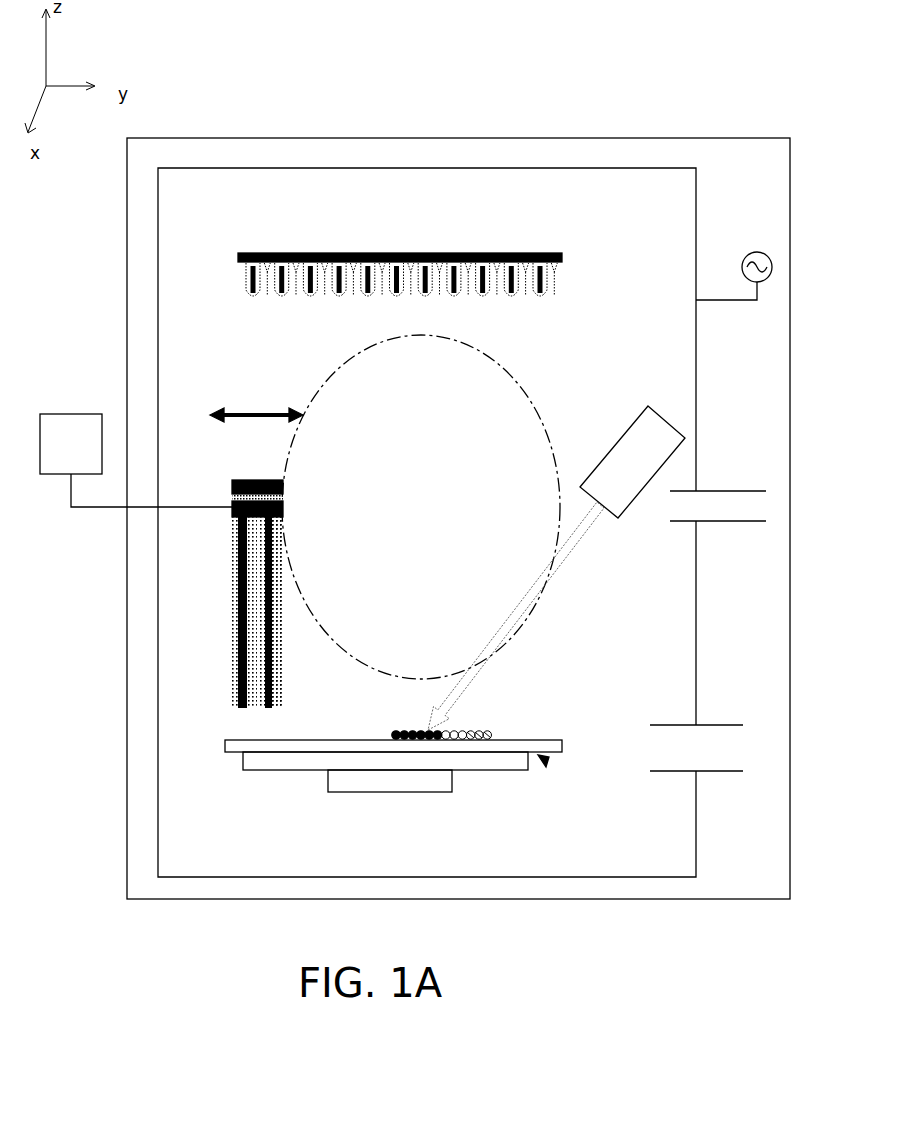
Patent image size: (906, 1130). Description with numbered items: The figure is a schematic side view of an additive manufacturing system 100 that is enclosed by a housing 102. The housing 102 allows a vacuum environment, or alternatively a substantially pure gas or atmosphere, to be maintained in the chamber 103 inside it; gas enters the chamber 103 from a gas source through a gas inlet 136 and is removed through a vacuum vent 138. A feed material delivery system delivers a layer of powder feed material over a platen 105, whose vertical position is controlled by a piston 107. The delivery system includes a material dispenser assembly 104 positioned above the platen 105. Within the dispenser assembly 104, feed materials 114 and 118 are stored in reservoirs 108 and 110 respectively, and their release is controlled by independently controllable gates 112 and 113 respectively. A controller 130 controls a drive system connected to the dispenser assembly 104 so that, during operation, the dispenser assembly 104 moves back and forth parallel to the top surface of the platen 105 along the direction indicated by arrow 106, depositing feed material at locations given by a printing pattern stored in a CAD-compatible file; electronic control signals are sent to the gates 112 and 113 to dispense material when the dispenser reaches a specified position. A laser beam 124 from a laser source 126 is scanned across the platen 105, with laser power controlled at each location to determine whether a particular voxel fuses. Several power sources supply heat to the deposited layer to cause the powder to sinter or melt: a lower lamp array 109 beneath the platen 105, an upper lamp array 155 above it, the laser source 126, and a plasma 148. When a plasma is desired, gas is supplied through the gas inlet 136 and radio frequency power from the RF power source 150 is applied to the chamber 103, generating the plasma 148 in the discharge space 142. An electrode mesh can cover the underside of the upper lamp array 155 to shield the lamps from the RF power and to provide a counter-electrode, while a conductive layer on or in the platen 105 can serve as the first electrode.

The additive manufacturing system 100 is at (443, 80).
The housing 102 is at (791, 845).
The chamber 103 is at (553, 878).
The material dispenser assembly 104 is at (232, 497).
The platen 105 is at (549, 768).
The arrow 106 is at (267, 412).
The piston 107 is at (558, 740).
The reservoir 108 is at (230, 571).
The lower lamp array 109 is at (385, 762).
The reservoir 110 is at (277, 575).
The gate 112 is at (247, 705).
The gate 113 is at (266, 704).
The feed material 114 is at (393, 730).
The feed material 118 is at (487, 733).
The laser beam 124 is at (503, 617).
The laser source 126 is at (627, 458).
The controller 130 is at (90, 455).
The gas inlet 136 is at (731, 525).
The vacuum vent 138 is at (667, 723).
The discharge space 142 is at (432, 356).
The plasma 148 is at (432, 498).
The RF power source 150 is at (760, 254).
The upper lamp array 155 is at (258, 253).